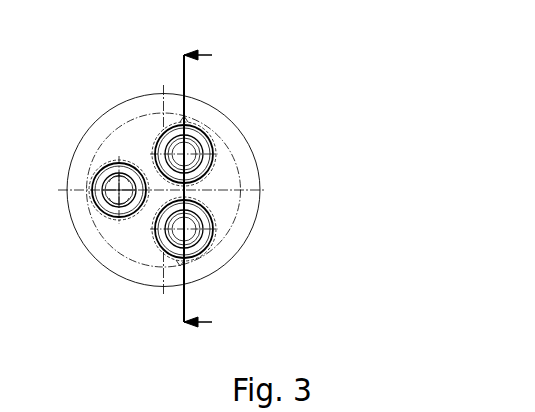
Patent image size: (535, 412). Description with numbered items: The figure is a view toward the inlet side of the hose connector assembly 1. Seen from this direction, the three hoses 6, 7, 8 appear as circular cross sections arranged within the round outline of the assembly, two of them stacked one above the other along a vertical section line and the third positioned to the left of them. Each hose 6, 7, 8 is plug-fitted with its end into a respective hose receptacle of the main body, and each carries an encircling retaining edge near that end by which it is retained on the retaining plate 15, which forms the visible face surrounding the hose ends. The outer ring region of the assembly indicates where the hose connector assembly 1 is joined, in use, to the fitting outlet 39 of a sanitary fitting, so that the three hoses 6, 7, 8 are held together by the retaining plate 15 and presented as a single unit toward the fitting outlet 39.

The hose connector assembly 1 is at (240, 99).
The hose 6 is at (200, 234).
The hose 7 is at (207, 152).
The hose 8 is at (92, 193).
The retaining plate 15 is at (135, 147).
The fitting outlet 39 is at (242, 216).